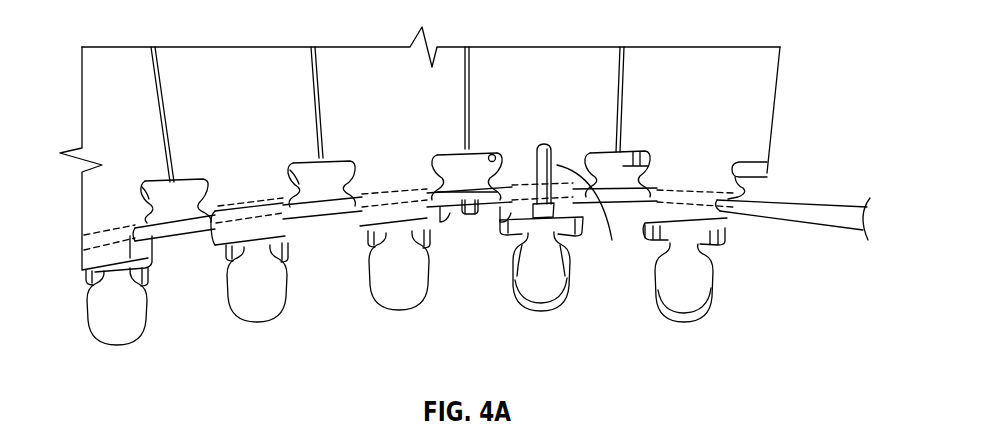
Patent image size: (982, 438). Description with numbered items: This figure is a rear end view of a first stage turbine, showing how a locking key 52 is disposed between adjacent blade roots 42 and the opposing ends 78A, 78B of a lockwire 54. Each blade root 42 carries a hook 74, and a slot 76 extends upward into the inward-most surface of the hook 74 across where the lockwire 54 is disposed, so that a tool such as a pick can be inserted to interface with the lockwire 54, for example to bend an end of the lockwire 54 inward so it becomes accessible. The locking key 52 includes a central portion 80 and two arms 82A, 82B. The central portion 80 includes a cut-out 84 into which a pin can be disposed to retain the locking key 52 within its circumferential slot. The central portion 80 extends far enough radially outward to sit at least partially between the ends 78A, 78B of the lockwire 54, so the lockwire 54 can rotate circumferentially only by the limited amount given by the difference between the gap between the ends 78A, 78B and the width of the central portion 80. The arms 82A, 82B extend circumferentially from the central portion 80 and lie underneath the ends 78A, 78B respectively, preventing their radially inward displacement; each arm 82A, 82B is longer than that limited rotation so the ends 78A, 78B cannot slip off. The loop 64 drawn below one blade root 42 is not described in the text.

The blade root 42 is at (369, 233).
The locking key 52 is at (478, 228).
The lockwire 54 is at (327, 206).
The loop 64 is at (548, 280).
The hook 74 is at (593, 215).
The slot 76 is at (547, 158).
The end of lockwire 78A is at (447, 192).
The end of lockwire 78B is at (489, 158).
The central portion 80 is at (468, 195).
The arm 82A is at (440, 212).
The arm 82B is at (490, 218).
The cut-out 84 is at (482, 230).